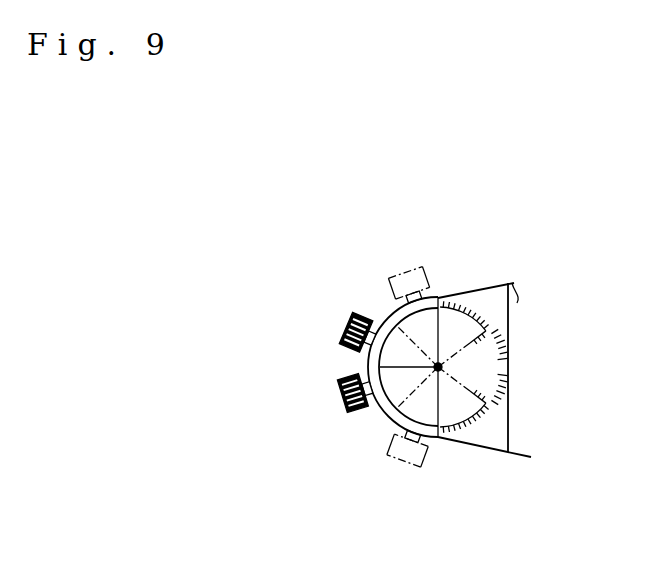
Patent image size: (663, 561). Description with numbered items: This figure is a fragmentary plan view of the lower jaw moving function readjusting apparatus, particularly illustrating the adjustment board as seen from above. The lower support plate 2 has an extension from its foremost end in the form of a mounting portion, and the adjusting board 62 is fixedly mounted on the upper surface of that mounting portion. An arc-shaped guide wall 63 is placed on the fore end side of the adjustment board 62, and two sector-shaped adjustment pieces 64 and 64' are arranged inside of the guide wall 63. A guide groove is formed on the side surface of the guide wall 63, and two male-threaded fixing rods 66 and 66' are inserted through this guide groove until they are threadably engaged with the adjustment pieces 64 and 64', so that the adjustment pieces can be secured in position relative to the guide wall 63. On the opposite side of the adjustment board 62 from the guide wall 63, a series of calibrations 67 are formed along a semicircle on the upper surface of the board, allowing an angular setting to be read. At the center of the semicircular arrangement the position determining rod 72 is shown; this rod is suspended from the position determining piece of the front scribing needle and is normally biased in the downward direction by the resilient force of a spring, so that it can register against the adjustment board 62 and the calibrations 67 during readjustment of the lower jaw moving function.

The lower support plate 2 is at (529, 428).
The adjusting board 62 is at (487, 450).
The arc-shaped guide wall 63 is at (391, 419).
The sector-shaped adjustment piece 64 is at (426, 468).
The sector-shaped adjustment piece 64' is at (385, 291).
The male-threaded fixing rod 66 is at (323, 402).
The male-threaded fixing rod 66' is at (325, 335).
The calibrations 67 is at (470, 310).
The position determining rod 72 is at (442, 366).